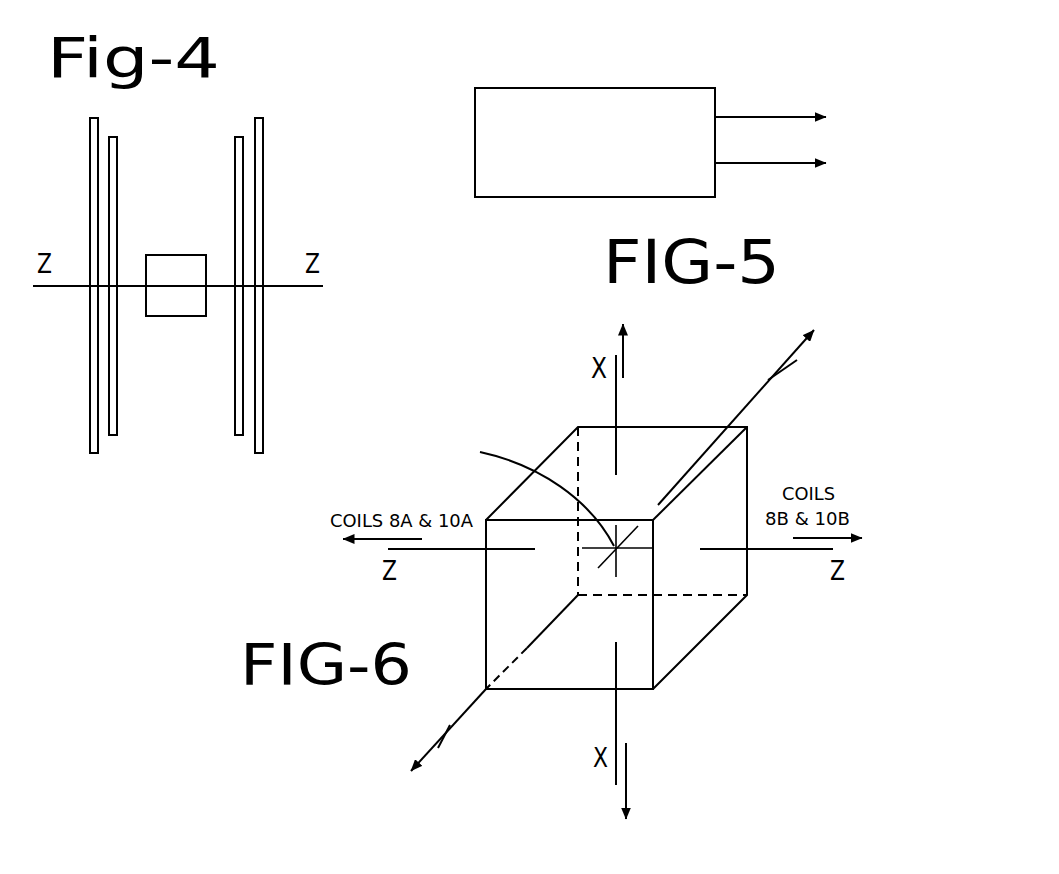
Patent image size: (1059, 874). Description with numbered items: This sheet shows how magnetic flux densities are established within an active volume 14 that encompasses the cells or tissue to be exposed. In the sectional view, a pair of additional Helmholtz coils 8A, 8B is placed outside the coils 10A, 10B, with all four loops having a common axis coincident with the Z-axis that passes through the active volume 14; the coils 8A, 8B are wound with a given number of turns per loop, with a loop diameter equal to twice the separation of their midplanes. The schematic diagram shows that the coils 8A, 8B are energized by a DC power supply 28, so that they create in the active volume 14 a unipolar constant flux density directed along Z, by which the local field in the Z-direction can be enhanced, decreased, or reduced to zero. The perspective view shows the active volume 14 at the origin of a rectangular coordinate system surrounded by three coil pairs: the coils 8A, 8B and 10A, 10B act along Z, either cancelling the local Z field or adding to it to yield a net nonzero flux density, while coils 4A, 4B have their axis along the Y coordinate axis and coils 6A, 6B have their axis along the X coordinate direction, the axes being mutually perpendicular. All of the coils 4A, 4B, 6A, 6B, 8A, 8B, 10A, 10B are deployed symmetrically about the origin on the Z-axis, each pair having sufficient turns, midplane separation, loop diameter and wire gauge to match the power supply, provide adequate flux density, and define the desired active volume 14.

In FIG. 4, the active volume 14 is at (182, 251).
In FIG. 6, the active volume 14 is at (787, 455).
In FIG. 4, the Helmholtz coil 8A is at (101, 420).
In FIG. 4, the Helmholtz coil 8B is at (254, 405).
In FIG. 4, the coil 10A is at (153, 357).
In FIG. 4, the coil 10B is at (234, 375).
In FIG. 5, the DC power supply 28 is at (605, 86).
In FIG. 6, the coil 4A is at (474, 695).
In FIG. 6, the coil 4B is at (757, 407).
In FIG. 6, the coil 6A is at (667, 781).
In FIG. 6, the coil 6B is at (666, 351).